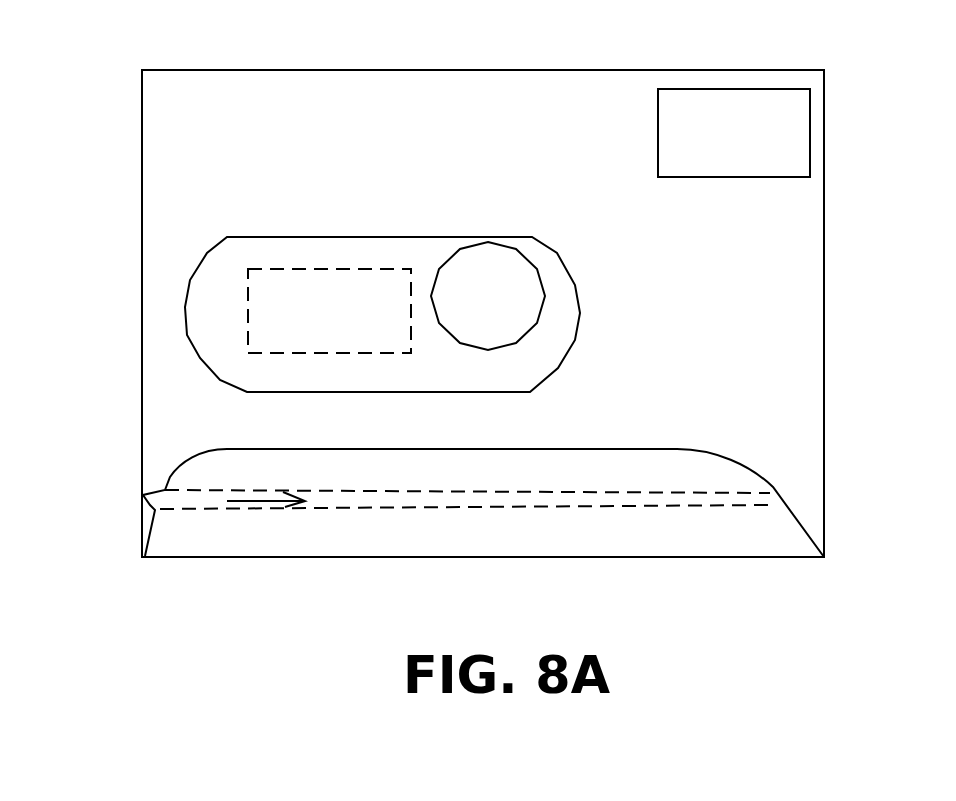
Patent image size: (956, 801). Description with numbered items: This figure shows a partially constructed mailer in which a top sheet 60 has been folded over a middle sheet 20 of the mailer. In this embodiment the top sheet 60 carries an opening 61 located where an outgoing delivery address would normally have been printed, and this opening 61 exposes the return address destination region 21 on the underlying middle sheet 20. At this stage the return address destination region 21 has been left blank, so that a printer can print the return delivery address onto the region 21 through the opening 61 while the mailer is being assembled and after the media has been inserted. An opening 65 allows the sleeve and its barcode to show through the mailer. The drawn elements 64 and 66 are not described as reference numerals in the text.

The top sheet 60 is at (512, 90).
The opening 61 is at (385, 238).
The middle sheet 20 is at (379, 306).
The return address destination region 21 is at (248, 292).
The speaker 64 is at (573, 291).
The opening 65 is at (537, 268).
The return pouch with tear strip 66 is at (353, 533).